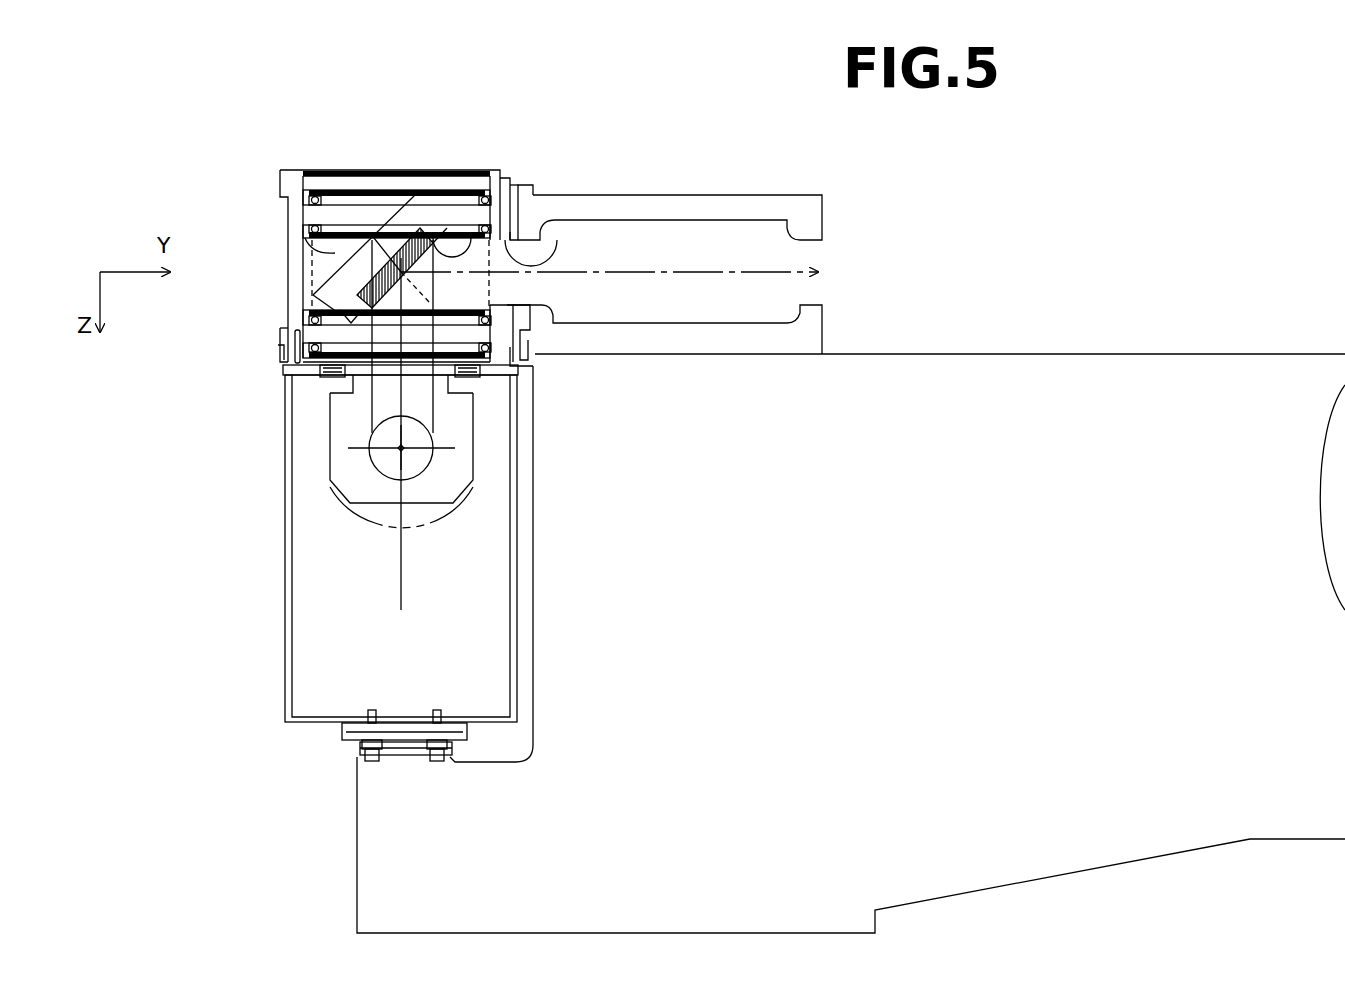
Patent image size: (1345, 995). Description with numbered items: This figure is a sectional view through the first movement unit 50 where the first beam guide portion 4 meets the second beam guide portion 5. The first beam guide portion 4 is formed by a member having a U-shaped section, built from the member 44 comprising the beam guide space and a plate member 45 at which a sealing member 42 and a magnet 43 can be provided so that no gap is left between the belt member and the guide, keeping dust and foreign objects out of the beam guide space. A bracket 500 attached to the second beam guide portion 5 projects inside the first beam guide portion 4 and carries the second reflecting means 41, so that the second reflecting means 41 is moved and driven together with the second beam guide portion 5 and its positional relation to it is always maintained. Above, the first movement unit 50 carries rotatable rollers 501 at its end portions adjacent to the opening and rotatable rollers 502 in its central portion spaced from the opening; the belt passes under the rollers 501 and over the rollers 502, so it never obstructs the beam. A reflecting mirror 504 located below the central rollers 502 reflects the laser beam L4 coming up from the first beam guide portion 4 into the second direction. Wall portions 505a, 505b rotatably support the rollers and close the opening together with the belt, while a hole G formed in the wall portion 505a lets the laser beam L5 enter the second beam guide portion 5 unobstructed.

The first beam guide portion 4 is at (238, 597).
The second beam guide portion 5 is at (729, 177).
The second reflecting means 41 is at (380, 466).
The sealing member 42 is at (333, 374).
The magnet 43 is at (353, 381).
The member comprising beam guide space 44 is at (285, 632).
The plate member 45 is at (285, 372).
The first movement unit 50 is at (378, 153).
The bracket 500 is at (372, 405).
The rotatable roller 501 is at (313, 293).
The rotatable roller 502 is at (320, 253).
The reflecting mirror 504 is at (448, 232).
The wall portion 505a is at (500, 168).
The wall portion 505b is at (295, 168).
The hole G is at (553, 225).
The laser beam L4 is at (403, 420).
The laser beam L5 is at (753, 274).